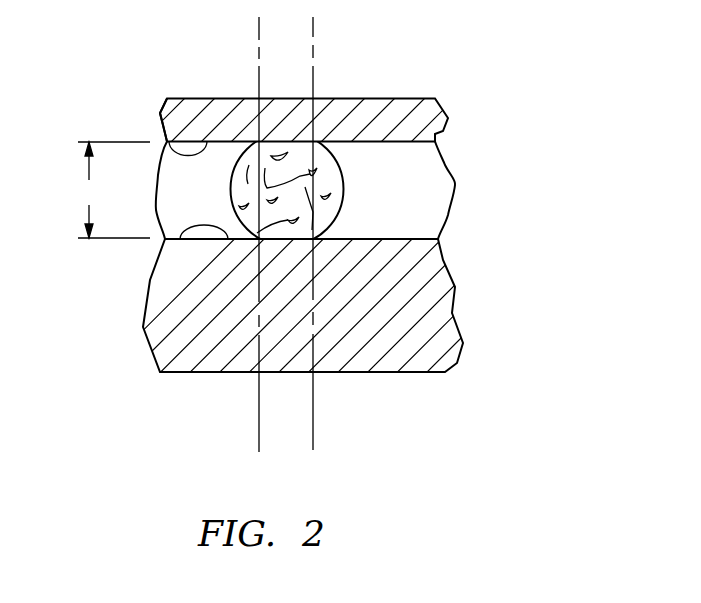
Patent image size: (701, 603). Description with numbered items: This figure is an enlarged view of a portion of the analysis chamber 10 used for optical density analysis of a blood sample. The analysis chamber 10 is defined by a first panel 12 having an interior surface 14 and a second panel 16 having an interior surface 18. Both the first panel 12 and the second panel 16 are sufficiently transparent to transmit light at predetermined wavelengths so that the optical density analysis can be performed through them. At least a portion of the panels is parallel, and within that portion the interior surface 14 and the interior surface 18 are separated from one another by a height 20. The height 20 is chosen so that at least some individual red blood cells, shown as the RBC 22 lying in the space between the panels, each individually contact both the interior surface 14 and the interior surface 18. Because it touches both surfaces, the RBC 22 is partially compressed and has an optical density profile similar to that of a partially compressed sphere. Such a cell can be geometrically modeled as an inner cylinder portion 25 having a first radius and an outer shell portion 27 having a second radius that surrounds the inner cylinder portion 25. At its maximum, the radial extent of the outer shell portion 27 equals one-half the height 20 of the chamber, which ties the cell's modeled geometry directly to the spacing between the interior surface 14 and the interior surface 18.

The analysis chamber 10 is at (420, 173).
The first panel 12 is at (182, 98).
The interior surface 14 is at (166, 100).
The second panel 16 is at (383, 373).
The interior surface 18 is at (162, 256).
The height 20 is at (111, 190).
The RBC 22 is at (362, 207).
The inner cylinder portion 25 is at (305, 155).
The outer shell portion 27 is at (236, 168).